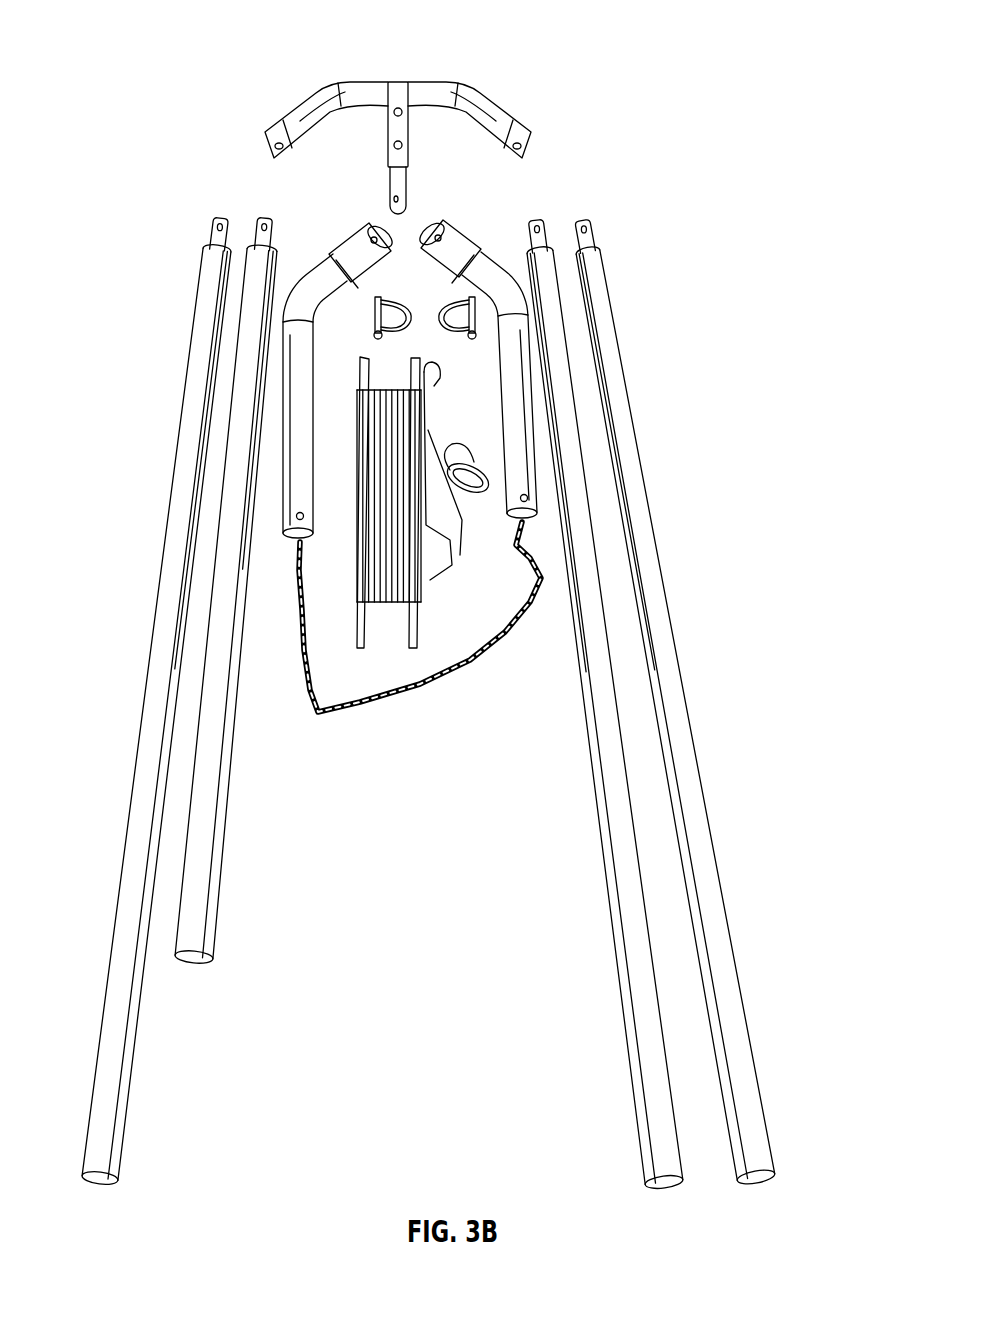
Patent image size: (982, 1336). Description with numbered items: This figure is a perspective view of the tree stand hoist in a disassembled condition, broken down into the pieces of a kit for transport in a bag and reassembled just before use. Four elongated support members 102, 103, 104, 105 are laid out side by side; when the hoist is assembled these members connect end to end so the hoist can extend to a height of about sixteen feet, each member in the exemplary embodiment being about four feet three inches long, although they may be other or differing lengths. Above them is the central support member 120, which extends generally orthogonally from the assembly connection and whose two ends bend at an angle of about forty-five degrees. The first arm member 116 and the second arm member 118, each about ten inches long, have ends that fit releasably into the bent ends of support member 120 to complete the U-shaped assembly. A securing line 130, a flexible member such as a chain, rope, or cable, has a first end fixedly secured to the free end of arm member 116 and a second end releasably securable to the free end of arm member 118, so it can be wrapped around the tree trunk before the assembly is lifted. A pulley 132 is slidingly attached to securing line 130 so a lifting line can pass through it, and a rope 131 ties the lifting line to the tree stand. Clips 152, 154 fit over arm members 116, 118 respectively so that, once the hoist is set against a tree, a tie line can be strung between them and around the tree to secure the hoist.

The support member 102 is at (120, 1145).
The support member 103 is at (210, 930).
The support member 104 is at (740, 1042).
The support member 105 is at (645, 1140).
The first arm member 116 is at (302, 352).
The second arm member 118 is at (507, 378).
The support member 120 is at (392, 82).
The securing line 130 is at (318, 716).
The rope 131 is at (372, 605).
The pulley 132 is at (474, 463).
The clip 152 is at (380, 298).
The clip 154 is at (457, 300).